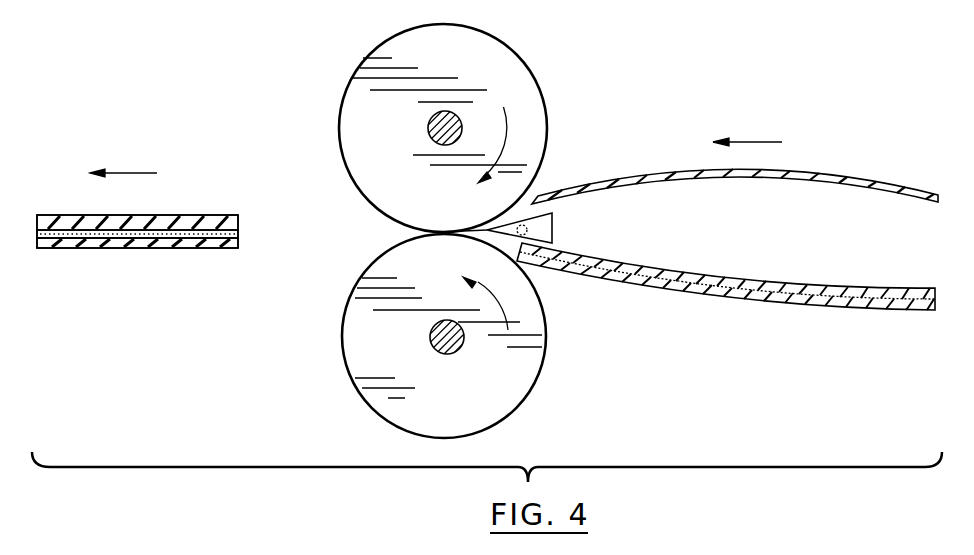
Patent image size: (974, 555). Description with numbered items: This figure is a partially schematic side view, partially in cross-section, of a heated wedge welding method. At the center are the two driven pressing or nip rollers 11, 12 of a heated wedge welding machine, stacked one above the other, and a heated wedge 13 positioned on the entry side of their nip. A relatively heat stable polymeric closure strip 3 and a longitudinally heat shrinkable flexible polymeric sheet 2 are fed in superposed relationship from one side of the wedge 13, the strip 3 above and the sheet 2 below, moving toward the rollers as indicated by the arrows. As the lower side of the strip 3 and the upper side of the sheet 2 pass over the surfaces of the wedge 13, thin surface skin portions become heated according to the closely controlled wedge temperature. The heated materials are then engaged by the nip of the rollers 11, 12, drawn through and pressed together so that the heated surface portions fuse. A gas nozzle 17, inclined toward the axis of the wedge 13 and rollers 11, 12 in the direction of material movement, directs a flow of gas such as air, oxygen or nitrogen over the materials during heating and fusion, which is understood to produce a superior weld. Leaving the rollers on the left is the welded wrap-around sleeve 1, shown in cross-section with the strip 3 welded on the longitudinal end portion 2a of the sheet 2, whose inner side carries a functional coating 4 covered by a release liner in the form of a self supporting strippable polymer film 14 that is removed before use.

The wrap-around sleeve 1 is at (178, 168).
The heat shrinkable flexible polymeric sheet 2 is at (703, 276).
The longitudinal end portion 2a is at (238, 223).
The heat stable polymeric strip 3 is at (670, 170).
The functional coating 4 is at (238, 236).
The nip roller 11 is at (512, 65).
The nip roller 12 is at (530, 361).
The heated wedge 13 is at (546, 227).
The strippable polymer film 14 is at (192, 249).
The gas nozzle 17 is at (512, 222).